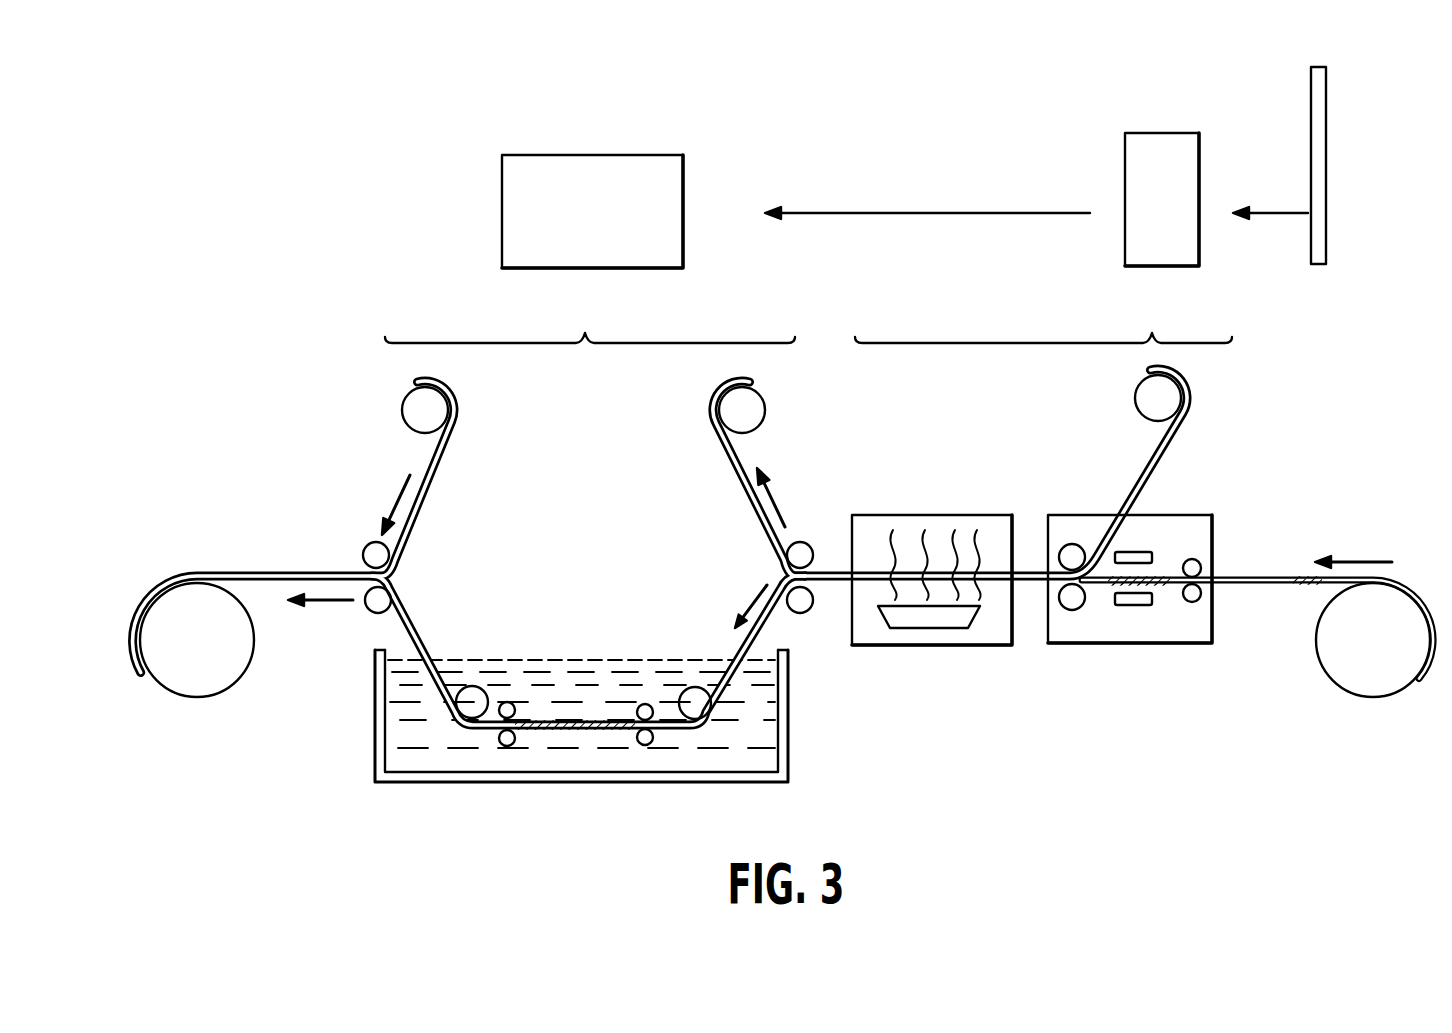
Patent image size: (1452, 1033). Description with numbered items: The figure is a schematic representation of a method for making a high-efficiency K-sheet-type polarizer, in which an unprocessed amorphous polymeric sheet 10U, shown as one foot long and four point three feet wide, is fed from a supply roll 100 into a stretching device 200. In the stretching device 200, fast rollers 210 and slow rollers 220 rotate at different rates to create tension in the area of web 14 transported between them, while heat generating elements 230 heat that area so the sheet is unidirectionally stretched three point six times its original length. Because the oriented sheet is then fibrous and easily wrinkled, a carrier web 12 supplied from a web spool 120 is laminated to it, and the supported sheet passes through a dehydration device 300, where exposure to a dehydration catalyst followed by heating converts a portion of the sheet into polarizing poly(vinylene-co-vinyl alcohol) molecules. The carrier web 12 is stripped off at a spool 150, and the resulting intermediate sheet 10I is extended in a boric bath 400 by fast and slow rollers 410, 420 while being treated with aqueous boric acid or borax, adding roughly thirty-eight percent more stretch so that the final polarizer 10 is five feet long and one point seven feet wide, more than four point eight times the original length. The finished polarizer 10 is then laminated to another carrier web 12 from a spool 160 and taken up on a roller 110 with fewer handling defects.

The polarizing sheet 10 is at (530, 118).
The intermediate sheet 10I is at (1107, 668).
The unprocessed polymeric sheet 10U is at (1294, 612).
The carrier web 12 is at (302, 569).
The web 14 is at (1250, 587).
The supply roll 100 is at (1357, 652).
The take-up roller 110 is at (181, 652).
The web spool 120 is at (1144, 408).
The spool 150 is at (728, 420).
The spool 160 is at (411, 420).
The stretching device 200 is at (1177, 645).
The fast rollers 210 is at (1073, 544).
The slow rollers 220 is at (1198, 560).
The heat generating elements 230 is at (1136, 552).
The dehydration device 300 is at (945, 645).
The boric bath 400 is at (790, 738).
The fast rollers 410 is at (507, 702).
The slow rollers 420 is at (643, 705).